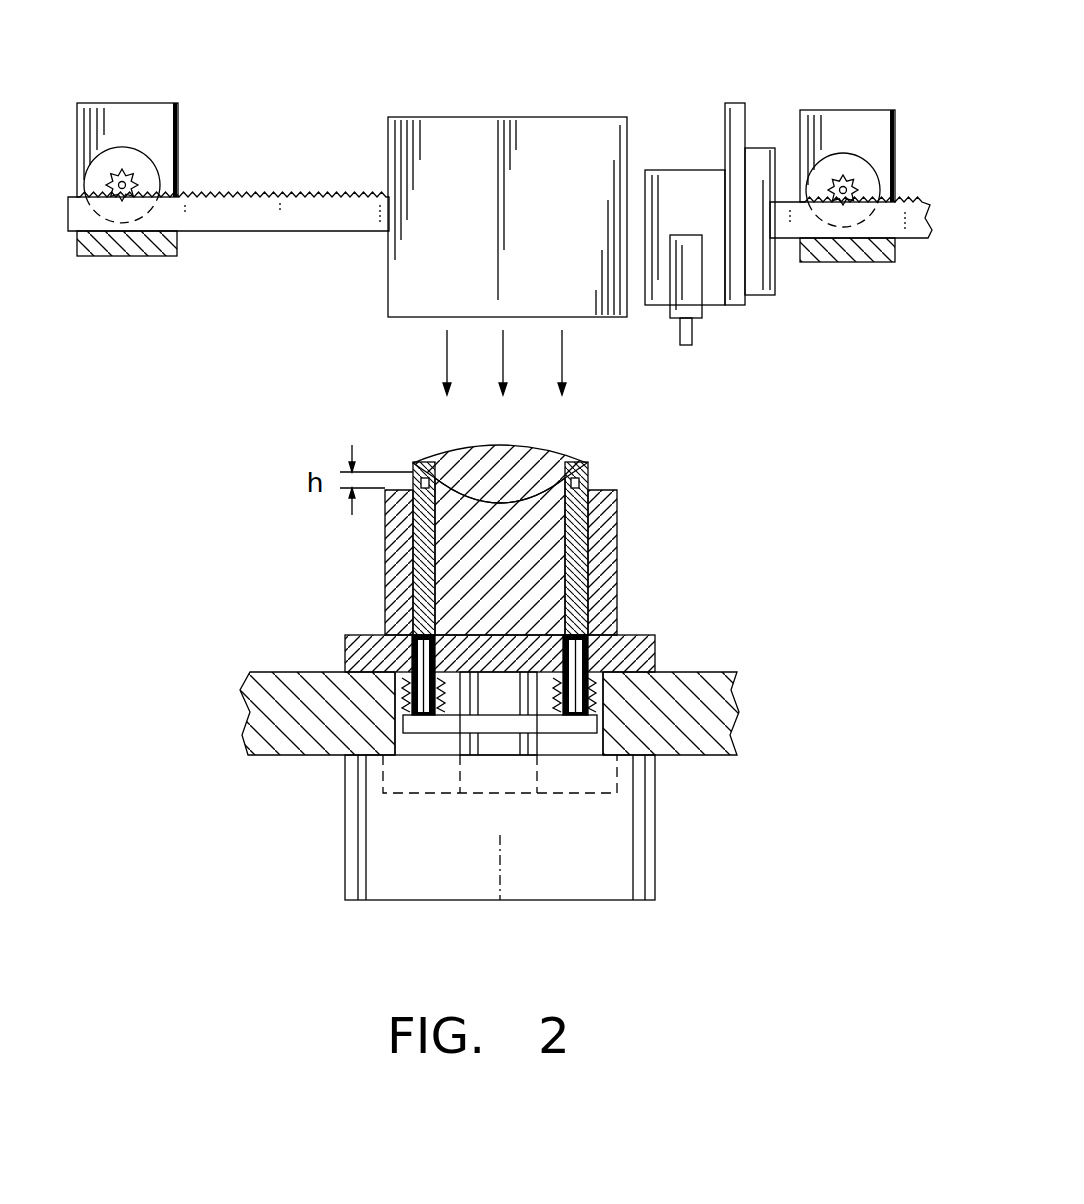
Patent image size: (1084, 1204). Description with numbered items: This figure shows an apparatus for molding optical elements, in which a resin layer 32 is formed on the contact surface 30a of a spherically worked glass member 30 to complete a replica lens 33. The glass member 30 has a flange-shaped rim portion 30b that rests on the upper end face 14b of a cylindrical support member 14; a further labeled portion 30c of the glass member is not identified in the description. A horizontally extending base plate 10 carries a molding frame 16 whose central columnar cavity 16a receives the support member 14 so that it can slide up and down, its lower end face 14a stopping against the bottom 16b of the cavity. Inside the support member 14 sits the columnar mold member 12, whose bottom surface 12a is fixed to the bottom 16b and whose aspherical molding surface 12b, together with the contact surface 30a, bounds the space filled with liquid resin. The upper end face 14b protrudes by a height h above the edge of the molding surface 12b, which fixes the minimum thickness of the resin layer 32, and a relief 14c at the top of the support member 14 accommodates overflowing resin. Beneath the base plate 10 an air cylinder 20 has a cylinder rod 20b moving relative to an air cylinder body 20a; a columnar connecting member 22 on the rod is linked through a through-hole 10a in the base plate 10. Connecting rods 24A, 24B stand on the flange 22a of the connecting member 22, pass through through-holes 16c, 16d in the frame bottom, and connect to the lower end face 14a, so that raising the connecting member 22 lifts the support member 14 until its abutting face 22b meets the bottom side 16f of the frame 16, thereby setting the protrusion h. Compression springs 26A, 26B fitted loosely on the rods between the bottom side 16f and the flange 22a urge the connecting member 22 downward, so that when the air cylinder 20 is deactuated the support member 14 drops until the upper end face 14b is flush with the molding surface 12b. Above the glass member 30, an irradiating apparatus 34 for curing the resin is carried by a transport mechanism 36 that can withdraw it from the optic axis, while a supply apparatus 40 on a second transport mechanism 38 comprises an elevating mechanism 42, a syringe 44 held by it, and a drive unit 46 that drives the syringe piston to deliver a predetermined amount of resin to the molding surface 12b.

The base plate 10 is at (690, 725).
The through-hole 10a is at (405, 745).
The mold member 12 is at (542, 572).
The bottom surface 12a is at (512, 630).
The molding surface 12b is at (425, 528).
The support member 14 is at (590, 520).
The lower end face 14a is at (420, 612).
The upper end face 14b is at (590, 465).
The relief 14c is at (590, 480).
The molding frame 16 is at (605, 605).
The columnar cavity 16a is at (547, 540).
The bottom of cavity 16b is at (592, 645).
The through-hole 16c is at (640, 655).
The through-hole 16d is at (392, 660).
The bottom side of frame 16f is at (418, 600).
The air cylinder 20 is at (670, 845).
The air cylinder body 20a is at (590, 880).
The cylinder rod 20b is at (520, 780).
The connecting member 22 is at (487, 690).
The flange 22a is at (440, 722).
The abutting face 22b is at (502, 735).
The connecting rod 24A is at (660, 757).
The connecting rod 24B is at (405, 718).
The compression spring 26A is at (598, 700).
The compression spring 26B is at (398, 700).
The glass member 30 is at (560, 470).
The contact surface 30a is at (522, 445).
The rim portion 30b is at (418, 462).
The lens concave surface 30c is at (430, 487).
The resin layer 32 is at (470, 500).
The replica lens 33 is at (516, 435).
The irradiating apparatus 34 is at (470, 130).
The transport mechanism 36 is at (190, 160).
The transport mechanism 38 is at (909, 182).
The supply apparatus 40 is at (720, 184).
The elevating mechanism 42 is at (765, 150).
The syringe 44 is at (688, 305).
The drive unit 46 is at (683, 178).